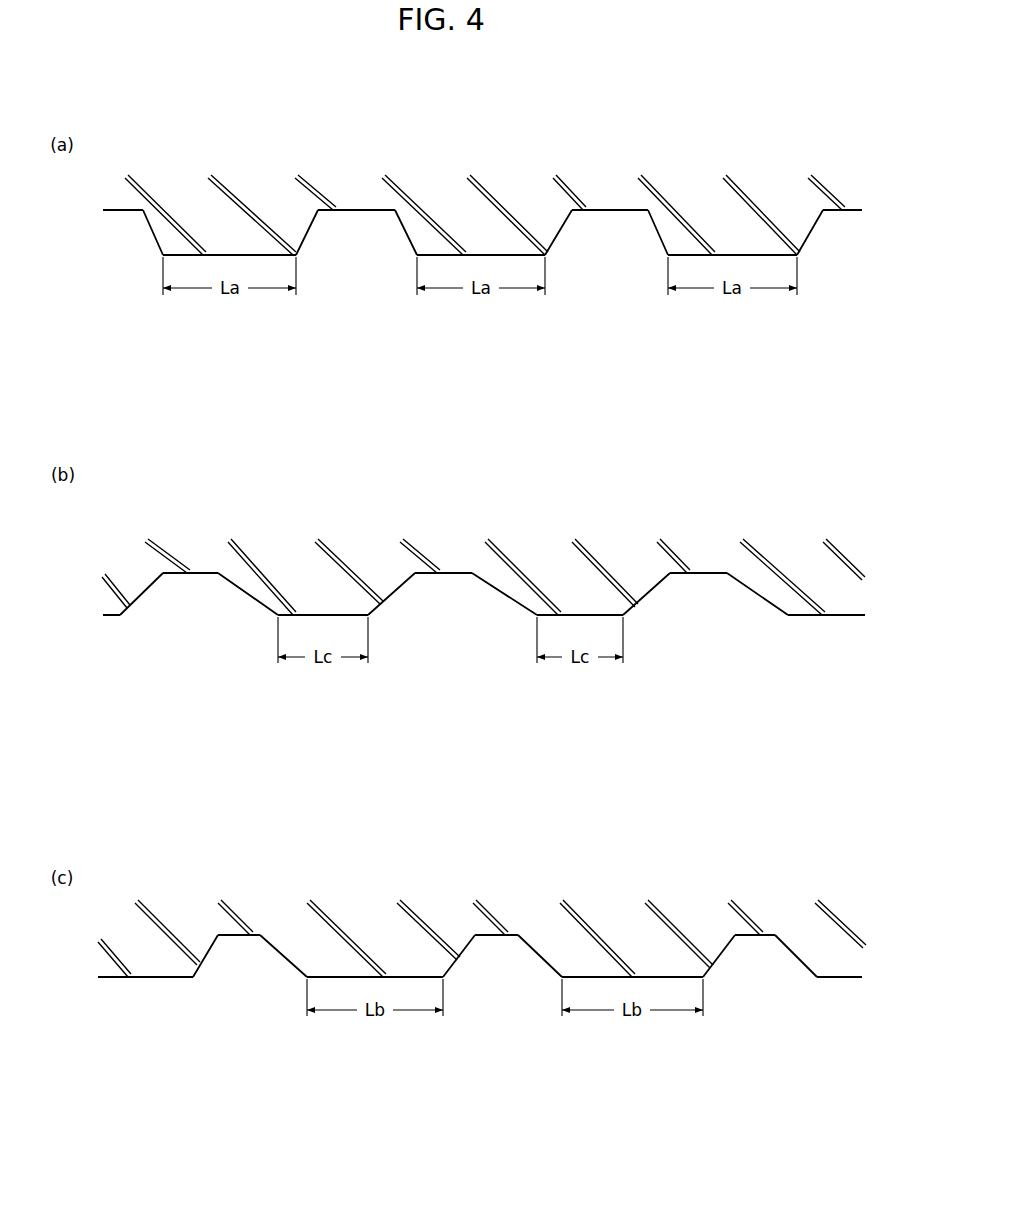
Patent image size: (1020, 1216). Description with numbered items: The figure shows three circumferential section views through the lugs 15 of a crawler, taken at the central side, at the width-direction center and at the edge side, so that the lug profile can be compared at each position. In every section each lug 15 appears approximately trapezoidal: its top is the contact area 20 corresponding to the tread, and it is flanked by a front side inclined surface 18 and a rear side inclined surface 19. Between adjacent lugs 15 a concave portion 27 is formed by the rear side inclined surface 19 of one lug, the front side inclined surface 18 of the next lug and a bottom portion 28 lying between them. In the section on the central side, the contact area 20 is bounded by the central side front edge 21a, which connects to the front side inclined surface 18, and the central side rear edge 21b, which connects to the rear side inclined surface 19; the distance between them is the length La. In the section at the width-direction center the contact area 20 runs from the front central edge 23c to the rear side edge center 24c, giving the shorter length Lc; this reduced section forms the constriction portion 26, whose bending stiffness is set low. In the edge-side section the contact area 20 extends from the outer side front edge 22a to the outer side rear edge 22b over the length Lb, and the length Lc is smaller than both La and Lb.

The lug 15 is at (258, 247).
The front side inclined surface 18 is at (148, 235).
The rear side inclined surface 19 is at (312, 235).
The contact area 20 is at (212, 254).
The central side front edge 21a is at (160, 257).
The central side rear edge 21b is at (297, 258).
The outer side front edge 22a is at (193, 979).
The outer side rear edge 22b is at (302, 979).
The front central edge 23c is at (277, 617).
The rear side edge center 24c is at (372, 617).
The constriction portion 26 is at (308, 613).
The concave portion 27 is at (350, 209).
The bottom portion 28 is at (110, 222).